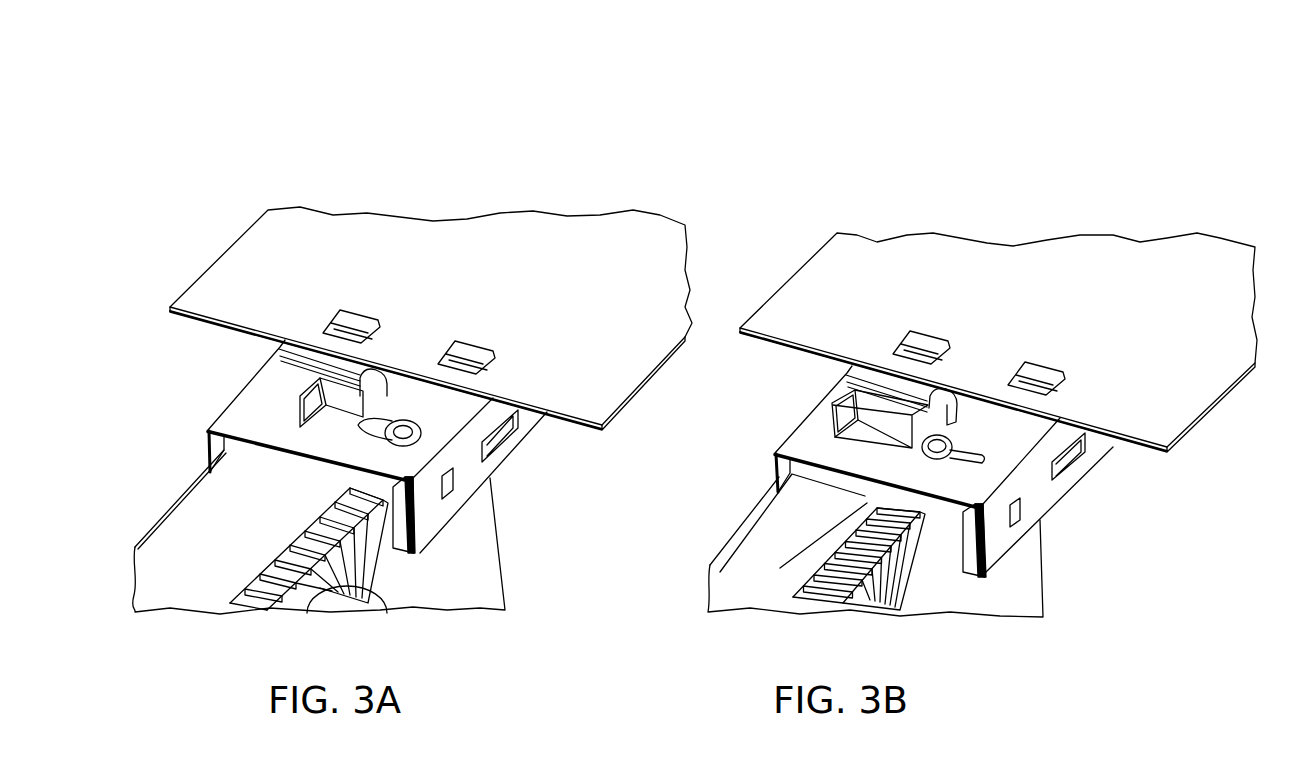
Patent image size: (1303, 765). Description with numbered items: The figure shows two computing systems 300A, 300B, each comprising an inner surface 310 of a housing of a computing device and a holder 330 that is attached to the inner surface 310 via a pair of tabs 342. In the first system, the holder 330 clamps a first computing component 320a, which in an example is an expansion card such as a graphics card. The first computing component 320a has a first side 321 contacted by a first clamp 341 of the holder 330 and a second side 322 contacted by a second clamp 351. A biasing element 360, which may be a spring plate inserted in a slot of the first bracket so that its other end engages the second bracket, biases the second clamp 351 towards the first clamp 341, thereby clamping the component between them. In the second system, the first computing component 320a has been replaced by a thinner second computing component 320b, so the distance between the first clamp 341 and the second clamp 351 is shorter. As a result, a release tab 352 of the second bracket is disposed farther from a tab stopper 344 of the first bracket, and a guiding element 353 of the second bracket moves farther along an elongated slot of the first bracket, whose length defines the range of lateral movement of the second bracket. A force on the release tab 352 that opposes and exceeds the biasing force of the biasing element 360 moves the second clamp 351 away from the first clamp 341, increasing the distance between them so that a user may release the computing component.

In FIG. 3A, the computing system 300A is at (358, 331).
In FIG. 3B, the computing system 300B is at (930, 333).
In FIG. 3A, the inner surface 310 is at (277, 257).
In FIG. 3A, the pair of tabs 342 is at (365, 315).
In FIG. 3A, the holder 330 is at (287, 403).
In FIG. 3A, the first clamp 341 is at (207, 432).
In FIG. 3A, the first side 321 is at (197, 483).
In FIG. 3A, the first computing component 320a is at (190, 527).
In FIG. 3B, the second computing component 320b is at (785, 543).
In FIG. 3A, the biasing element 360 is at (495, 448).
In FIG. 3B, the biasing element 360 is at (1090, 478).
In FIG. 3A, the second clamp 351 is at (393, 523).
In FIG. 3A, the second side 322 is at (448, 543).
In FIG. 3B, the release tab 352 is at (830, 407).
In FIG. 3B, the tab stopper 344 is at (953, 393).
In FIG. 3B, the guiding element 353 is at (957, 463).